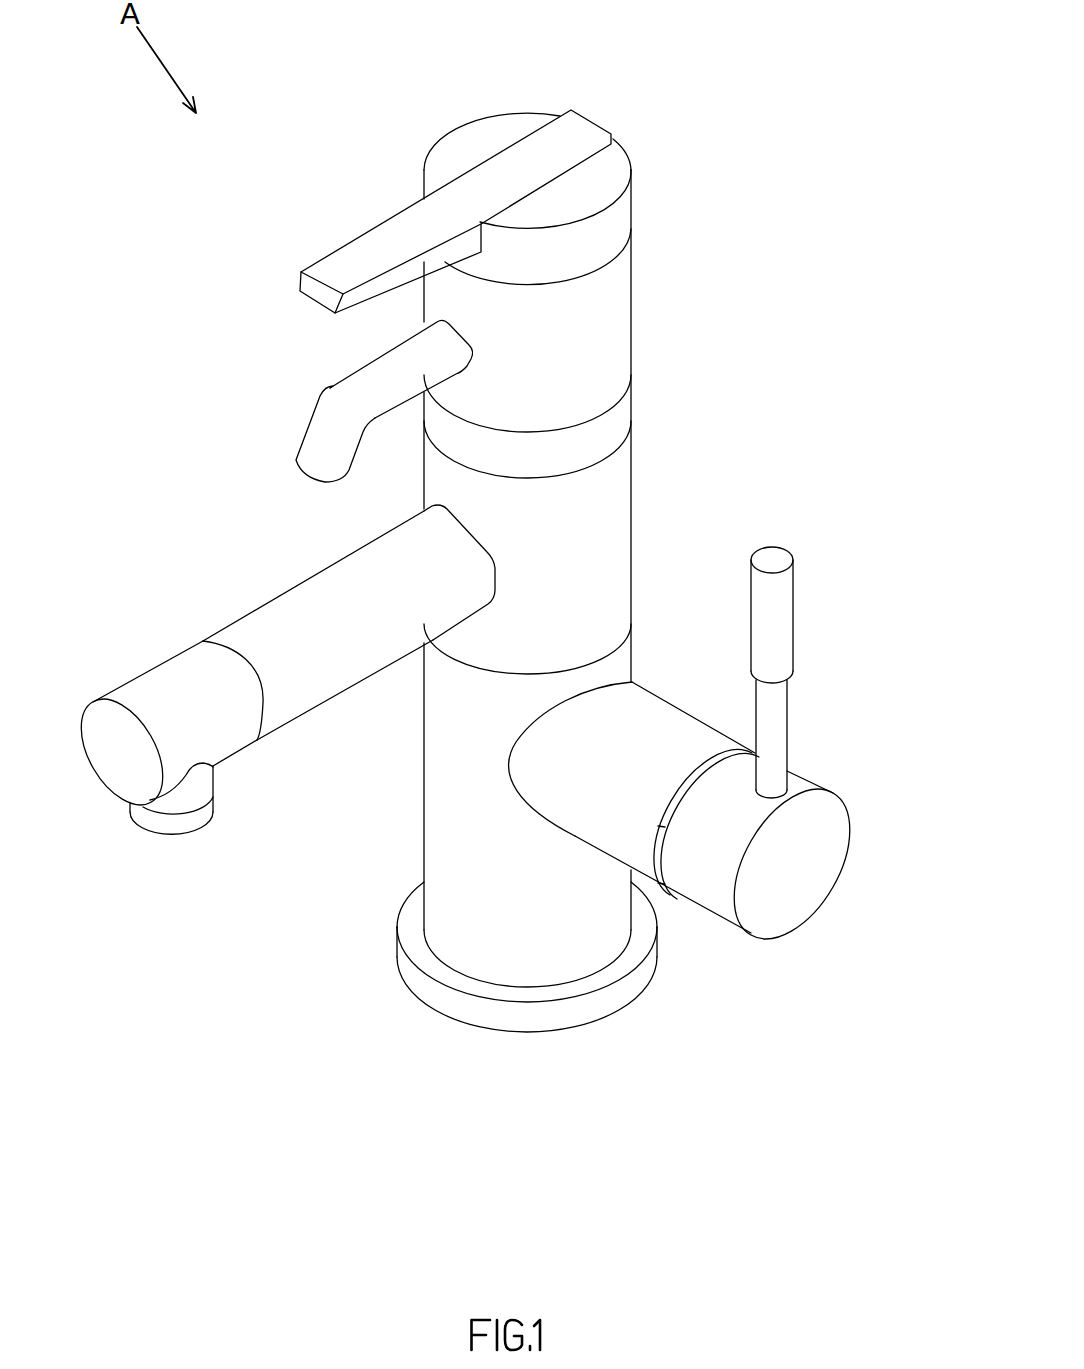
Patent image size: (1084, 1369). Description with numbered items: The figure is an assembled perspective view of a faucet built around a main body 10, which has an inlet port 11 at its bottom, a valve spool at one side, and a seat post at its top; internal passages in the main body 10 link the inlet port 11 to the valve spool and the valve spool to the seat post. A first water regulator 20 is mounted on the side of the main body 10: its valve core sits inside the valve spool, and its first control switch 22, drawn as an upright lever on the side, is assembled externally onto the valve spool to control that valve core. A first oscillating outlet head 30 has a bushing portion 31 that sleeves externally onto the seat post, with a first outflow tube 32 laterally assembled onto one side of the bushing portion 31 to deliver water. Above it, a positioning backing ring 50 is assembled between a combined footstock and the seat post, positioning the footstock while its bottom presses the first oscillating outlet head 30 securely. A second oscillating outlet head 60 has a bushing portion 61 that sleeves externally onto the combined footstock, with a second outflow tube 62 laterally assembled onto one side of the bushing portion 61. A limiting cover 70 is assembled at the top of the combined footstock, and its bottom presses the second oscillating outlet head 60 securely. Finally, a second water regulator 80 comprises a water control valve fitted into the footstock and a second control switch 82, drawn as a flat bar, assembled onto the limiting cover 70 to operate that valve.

The main body 10 is at (423, 828).
The inlet port 11 is at (490, 1015).
The first water regulator 20 is at (726, 753).
The first control switch 22 is at (783, 618).
The first oscillating outlet head 30 is at (279, 657).
The bushing portion 31 is at (437, 485).
The first outflow tube 32 is at (353, 572).
The positioning backing ring 50 is at (621, 415).
The second oscillating outlet head 60 is at (322, 390).
The bushing portion 61 is at (423, 311).
The second outflow tube 62 is at (333, 407).
The limiting cover 70 is at (597, 240).
The second water regulator 80 is at (507, 166).
The second control switch 82 is at (382, 243).